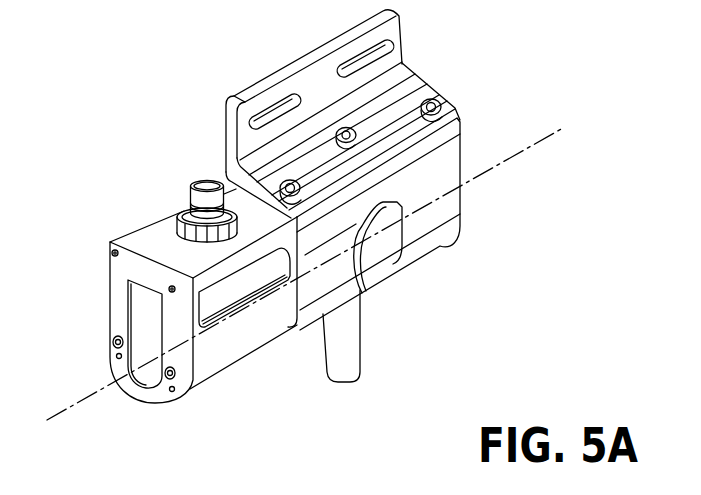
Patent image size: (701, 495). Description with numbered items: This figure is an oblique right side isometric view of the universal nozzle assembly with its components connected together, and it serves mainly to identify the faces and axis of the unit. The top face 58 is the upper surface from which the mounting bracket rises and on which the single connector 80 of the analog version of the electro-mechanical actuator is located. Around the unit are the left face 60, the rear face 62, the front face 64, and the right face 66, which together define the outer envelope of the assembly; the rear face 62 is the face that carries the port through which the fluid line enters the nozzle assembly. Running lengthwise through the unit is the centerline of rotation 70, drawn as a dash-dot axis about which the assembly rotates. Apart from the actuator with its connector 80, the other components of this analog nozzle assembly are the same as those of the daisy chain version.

The top face 58 is at (385, 113).
The left face 60 is at (283, 69).
The rear face 62 is at (456, 146).
The front face 64 is at (138, 322).
The right face 66 is at (332, 222).
The centerline of rotation 70 is at (92, 393).
The connector 80 is at (189, 203).